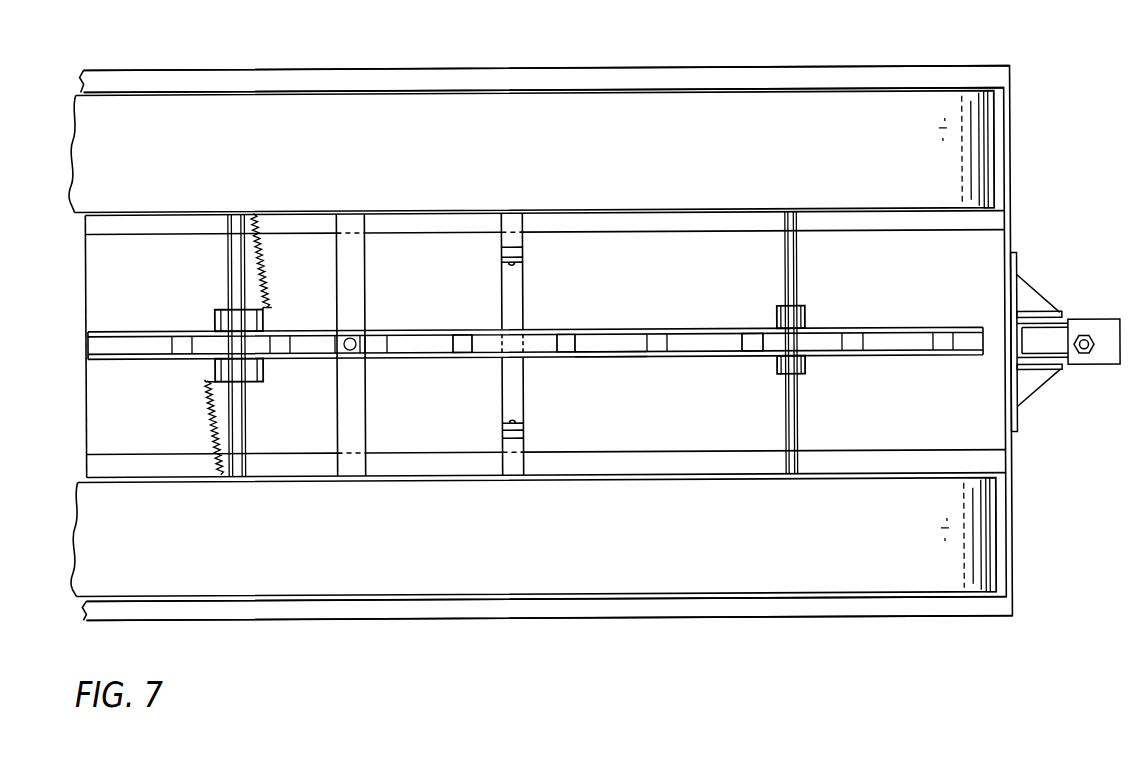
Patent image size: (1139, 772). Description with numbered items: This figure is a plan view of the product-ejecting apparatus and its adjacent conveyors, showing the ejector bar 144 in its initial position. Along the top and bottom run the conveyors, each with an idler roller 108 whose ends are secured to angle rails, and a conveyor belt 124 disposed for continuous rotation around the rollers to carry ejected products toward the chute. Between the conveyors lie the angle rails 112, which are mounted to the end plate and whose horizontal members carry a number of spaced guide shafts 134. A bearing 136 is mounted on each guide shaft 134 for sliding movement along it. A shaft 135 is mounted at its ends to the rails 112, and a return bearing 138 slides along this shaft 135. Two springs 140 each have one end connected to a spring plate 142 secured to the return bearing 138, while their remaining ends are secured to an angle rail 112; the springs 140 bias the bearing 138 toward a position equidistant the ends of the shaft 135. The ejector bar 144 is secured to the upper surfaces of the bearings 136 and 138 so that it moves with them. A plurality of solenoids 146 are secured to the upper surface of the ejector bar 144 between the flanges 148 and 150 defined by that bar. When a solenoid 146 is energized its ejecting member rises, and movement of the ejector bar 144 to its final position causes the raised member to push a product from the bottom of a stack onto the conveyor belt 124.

The idler roller 108 is at (983, 165).
The second angle rail 112 is at (290, 222).
The conveyor belt 124 is at (591, 120).
The guide shaft 134 is at (795, 426).
The shaft 135 is at (245, 418).
The bearing 136 is at (806, 320).
The return bearing 138 is at (218, 320).
The spring 140 is at (262, 268).
The spring plate 142 is at (268, 306).
The ejector bar 144 is at (606, 338).
The solenoid 146 is at (462, 330).
The flange 148 is at (538, 330).
The flange 150 is at (582, 357).